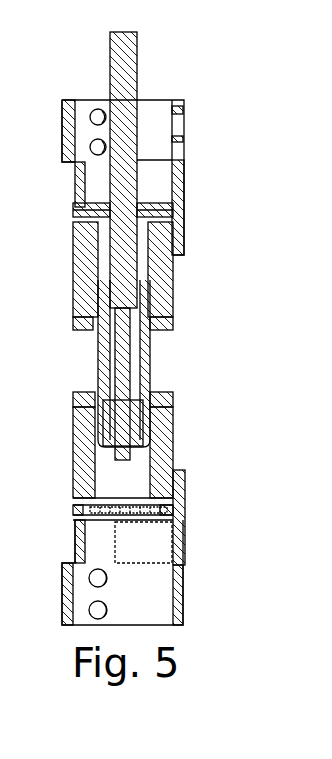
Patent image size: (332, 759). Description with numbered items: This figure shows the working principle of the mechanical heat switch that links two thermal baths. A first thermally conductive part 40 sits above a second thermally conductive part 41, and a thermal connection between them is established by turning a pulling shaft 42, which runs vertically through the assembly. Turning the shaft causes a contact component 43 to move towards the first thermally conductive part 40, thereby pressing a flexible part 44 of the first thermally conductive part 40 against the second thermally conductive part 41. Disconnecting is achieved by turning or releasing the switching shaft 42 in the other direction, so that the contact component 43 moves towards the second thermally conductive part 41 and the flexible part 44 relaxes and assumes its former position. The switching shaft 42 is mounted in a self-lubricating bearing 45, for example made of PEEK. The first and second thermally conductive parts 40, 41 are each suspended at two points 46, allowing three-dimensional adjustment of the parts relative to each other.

The first thermally conductive part 40 is at (184, 131).
The second thermally conductive part 41 is at (186, 557).
The pulling shaft 42 is at (138, 90).
The contact component 43 is at (135, 433).
The flexible part 44 is at (150, 368).
The self-lubricating bearing 45 is at (150, 280).
The suspension points 46 is at (174, 210).